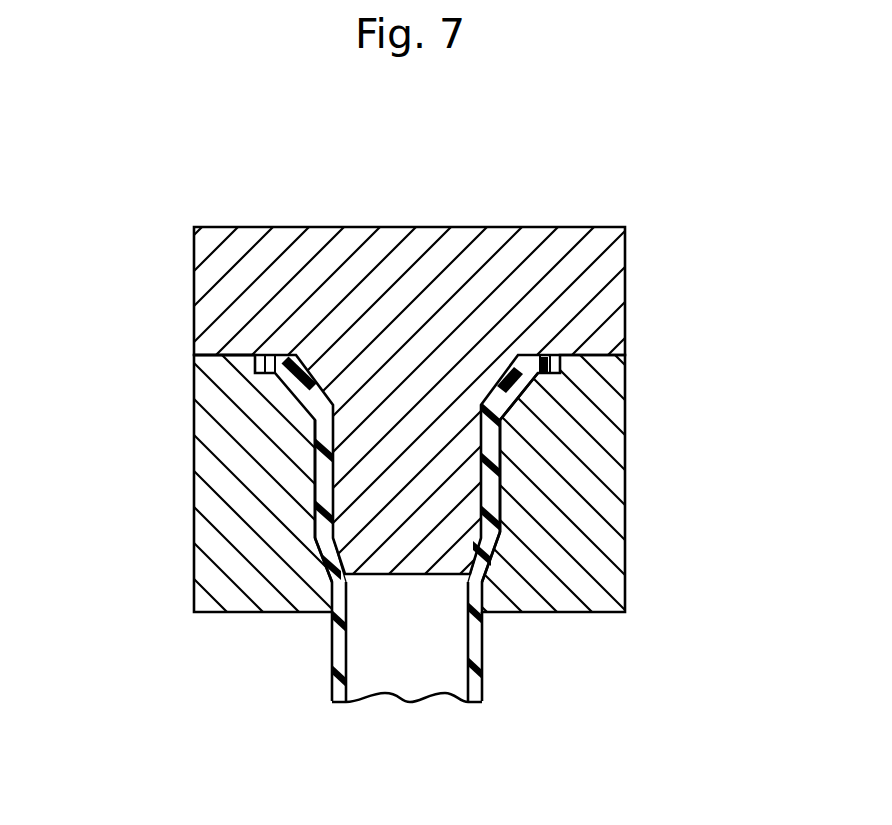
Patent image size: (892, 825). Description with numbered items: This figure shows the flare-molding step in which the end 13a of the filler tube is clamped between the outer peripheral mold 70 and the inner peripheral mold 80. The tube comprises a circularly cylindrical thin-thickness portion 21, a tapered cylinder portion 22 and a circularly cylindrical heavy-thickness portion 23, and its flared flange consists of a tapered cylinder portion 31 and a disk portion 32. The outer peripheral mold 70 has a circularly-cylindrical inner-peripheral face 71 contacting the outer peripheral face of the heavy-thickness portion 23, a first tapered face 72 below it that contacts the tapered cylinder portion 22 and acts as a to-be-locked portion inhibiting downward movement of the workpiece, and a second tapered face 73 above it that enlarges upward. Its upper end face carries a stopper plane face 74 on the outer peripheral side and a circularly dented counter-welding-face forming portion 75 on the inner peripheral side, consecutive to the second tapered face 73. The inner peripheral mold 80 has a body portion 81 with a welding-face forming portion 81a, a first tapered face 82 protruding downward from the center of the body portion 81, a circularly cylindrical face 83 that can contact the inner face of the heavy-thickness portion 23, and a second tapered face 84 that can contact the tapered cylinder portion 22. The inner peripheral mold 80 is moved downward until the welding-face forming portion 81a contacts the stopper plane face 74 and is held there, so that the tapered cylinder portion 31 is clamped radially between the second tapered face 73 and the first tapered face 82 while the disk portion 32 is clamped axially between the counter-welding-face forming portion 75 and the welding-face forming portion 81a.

The end of the filler tube 13a is at (465, 514).
The thin-thickness portion 21 is at (476, 677).
The tapered cylinder portion 22 is at (480, 562).
The heavy-thickness portion 23 is at (483, 475).
The tapered cylinder portion 31 is at (505, 410).
The disk portion 32 is at (538, 360).
The outer peripheral mold 70 is at (402, 412).
The circularly-cylindrical inner-peripheral face 71 is at (320, 483).
The first tapered face 72 is at (321, 556).
The second tapered face 73 is at (313, 392).
The stopper plane face 74 is at (222, 354).
The counter-welding-face forming portion 75 is at (272, 356).
The inner peripheral mold 80 is at (446, 412).
The body portion 81 is at (606, 268).
The welding-face forming portion 81a is at (446, 412).
The first tapered face 82 is at (537, 390).
The circularly cylindrical face 83 is at (497, 501).
The second tapered face 84 is at (490, 543).